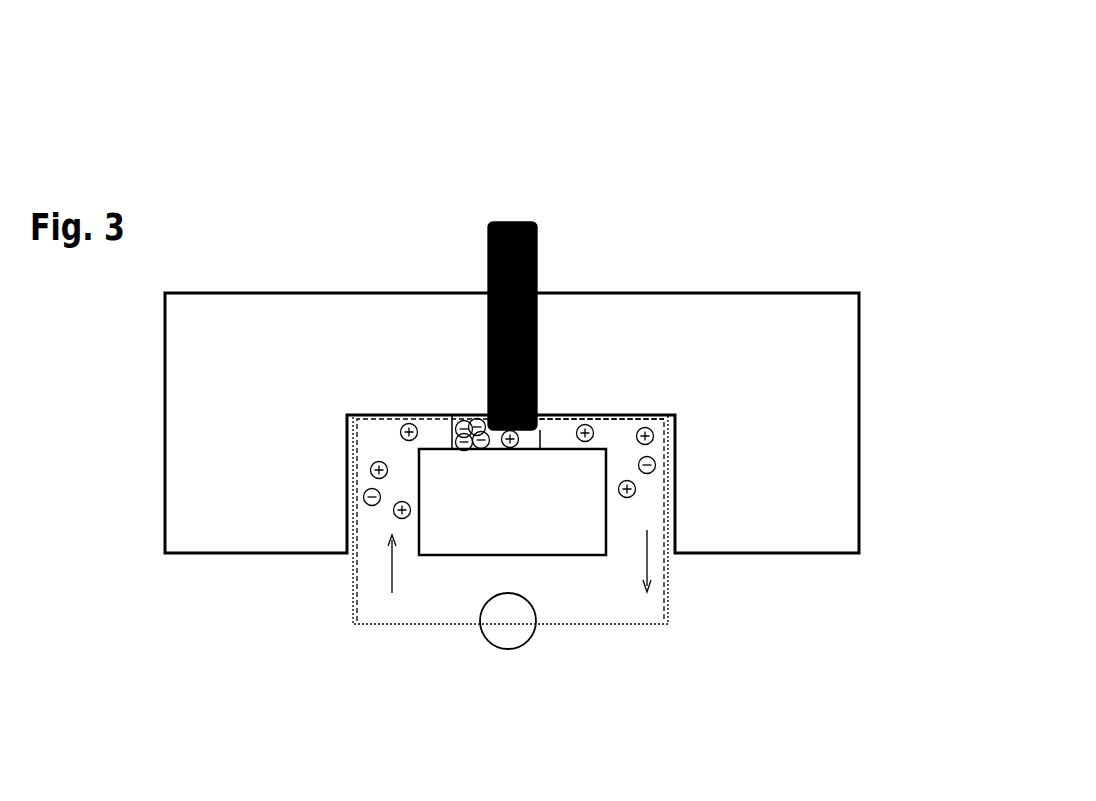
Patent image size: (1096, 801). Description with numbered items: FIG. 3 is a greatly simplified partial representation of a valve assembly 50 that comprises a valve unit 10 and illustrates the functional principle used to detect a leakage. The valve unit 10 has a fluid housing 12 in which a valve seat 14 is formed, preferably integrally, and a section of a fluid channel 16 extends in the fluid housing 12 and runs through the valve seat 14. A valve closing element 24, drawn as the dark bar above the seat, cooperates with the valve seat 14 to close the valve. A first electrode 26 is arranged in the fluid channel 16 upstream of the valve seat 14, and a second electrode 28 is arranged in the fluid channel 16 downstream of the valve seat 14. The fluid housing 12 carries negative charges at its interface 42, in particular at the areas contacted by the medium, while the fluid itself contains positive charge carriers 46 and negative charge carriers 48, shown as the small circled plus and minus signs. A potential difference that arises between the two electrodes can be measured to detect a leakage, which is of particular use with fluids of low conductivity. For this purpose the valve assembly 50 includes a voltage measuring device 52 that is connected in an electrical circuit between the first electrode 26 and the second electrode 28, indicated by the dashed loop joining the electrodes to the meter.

The valve unit 10 is at (926, 52).
The fluid housing 12 is at (218, 437).
The valve seat 14 is at (520, 443).
The fluid channel 16 is at (352, 508).
The valve closing element 24 is at (538, 237).
The first electrode 26 is at (430, 413).
The second electrode 28 is at (573, 420).
The interface 42 is at (452, 448).
The positive charge carriers 46 is at (401, 428).
The negative charge carriers 48 is at (455, 450).
The valve assembly 50 is at (862, 231).
The voltage measuring device 52 is at (500, 648).